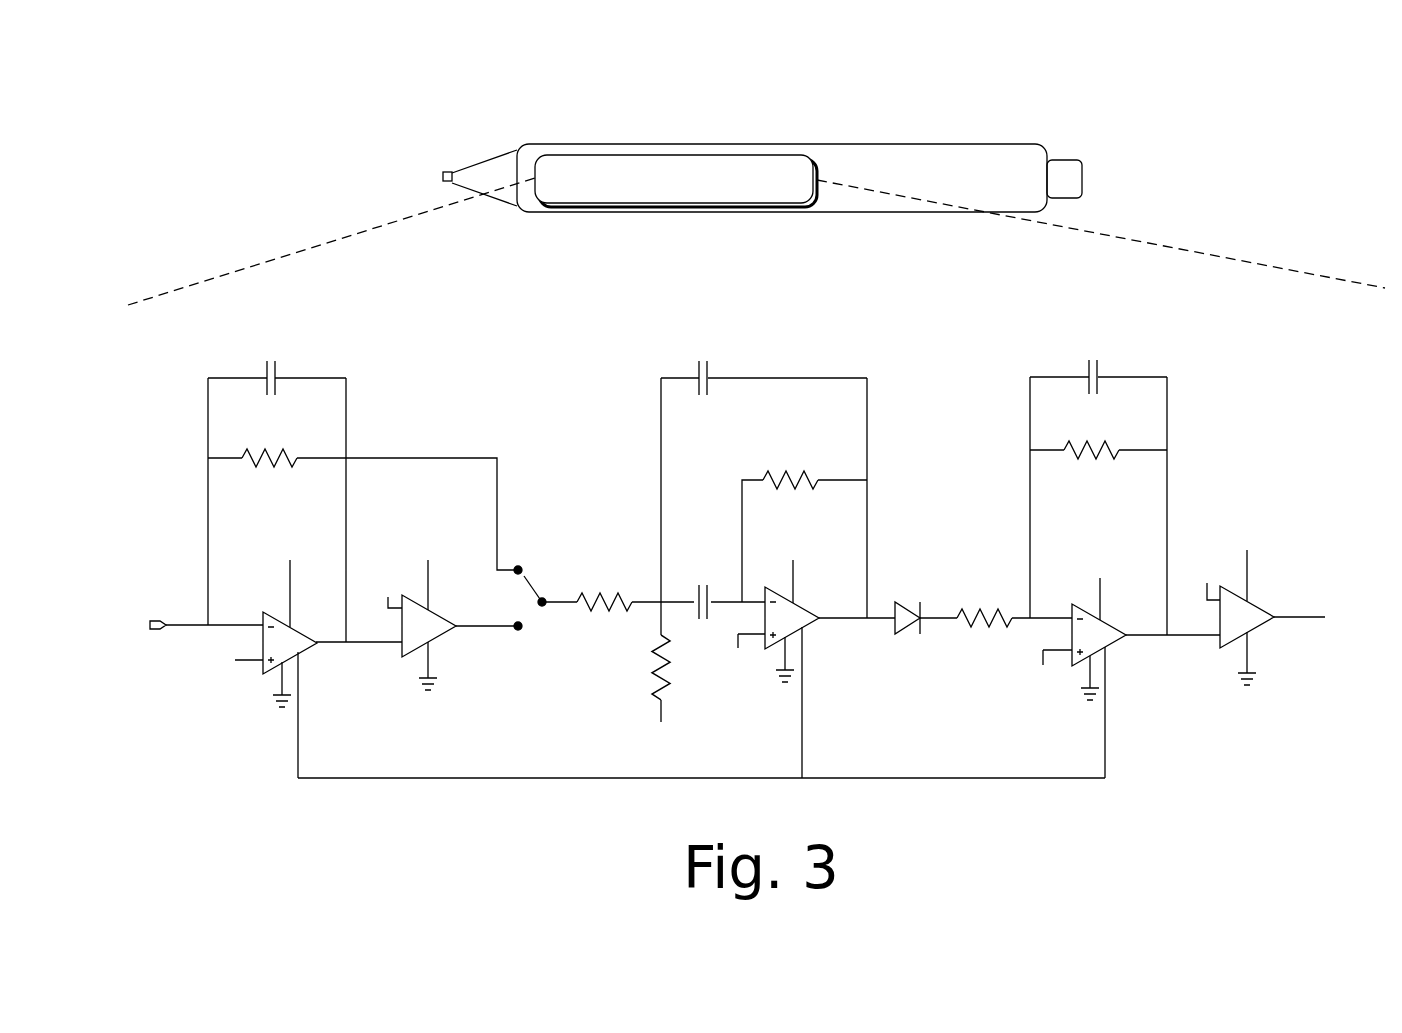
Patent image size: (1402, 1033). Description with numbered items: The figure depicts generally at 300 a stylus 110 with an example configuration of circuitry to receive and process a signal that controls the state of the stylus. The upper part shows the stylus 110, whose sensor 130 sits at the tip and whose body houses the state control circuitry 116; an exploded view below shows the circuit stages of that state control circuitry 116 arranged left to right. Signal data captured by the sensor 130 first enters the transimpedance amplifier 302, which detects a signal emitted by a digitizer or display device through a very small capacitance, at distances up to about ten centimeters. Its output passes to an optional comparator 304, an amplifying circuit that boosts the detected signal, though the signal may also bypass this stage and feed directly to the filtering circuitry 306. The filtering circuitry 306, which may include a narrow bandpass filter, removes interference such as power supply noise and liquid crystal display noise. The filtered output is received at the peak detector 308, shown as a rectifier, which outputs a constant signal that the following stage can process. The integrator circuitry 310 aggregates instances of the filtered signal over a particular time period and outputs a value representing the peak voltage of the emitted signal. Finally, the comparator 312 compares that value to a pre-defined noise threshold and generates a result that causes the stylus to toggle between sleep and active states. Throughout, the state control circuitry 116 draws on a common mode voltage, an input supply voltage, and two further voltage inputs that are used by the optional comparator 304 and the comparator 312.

The stylus with state control circuitry configuration 300 is at (205, 105).
The stylus 110 is at (639, 118).
The sensor 130 is at (447, 171).
The state control circuitry 116 is at (676, 181).
The transimpedance amplifier 302 is at (352, 345).
The optional comparator 304 is at (367, 345).
The filtering circuitry 306 is at (885, 345).
The peak detector 308 is at (1007, 345).
The integrator circuitry 310 is at (1175, 345).
The comparator 312 is at (1190, 345).